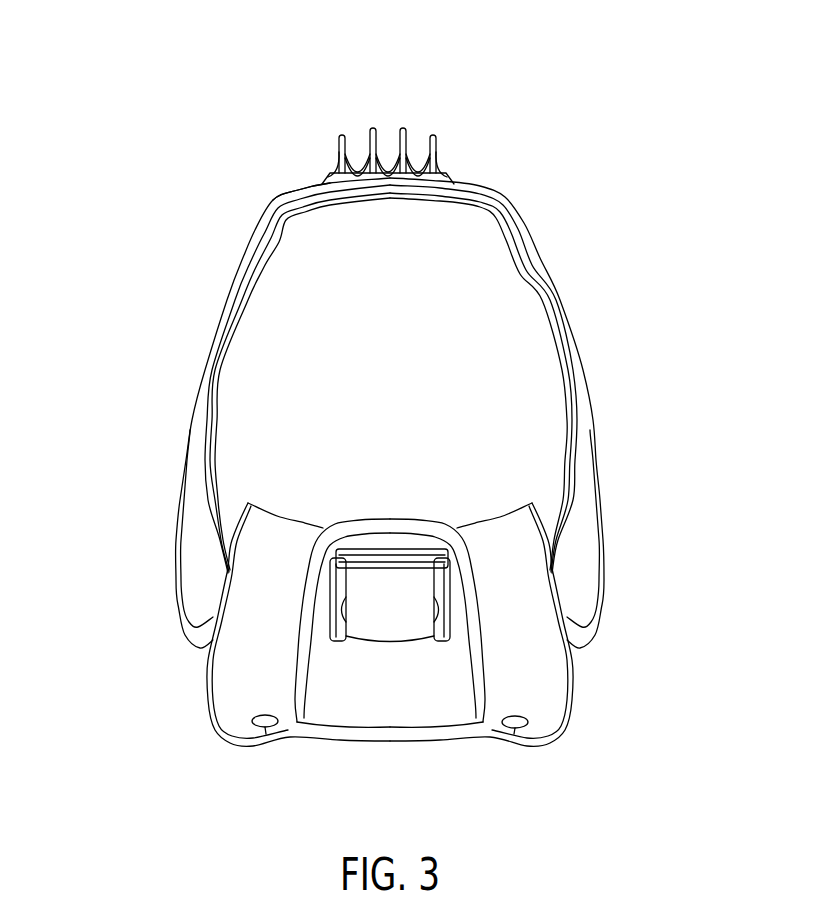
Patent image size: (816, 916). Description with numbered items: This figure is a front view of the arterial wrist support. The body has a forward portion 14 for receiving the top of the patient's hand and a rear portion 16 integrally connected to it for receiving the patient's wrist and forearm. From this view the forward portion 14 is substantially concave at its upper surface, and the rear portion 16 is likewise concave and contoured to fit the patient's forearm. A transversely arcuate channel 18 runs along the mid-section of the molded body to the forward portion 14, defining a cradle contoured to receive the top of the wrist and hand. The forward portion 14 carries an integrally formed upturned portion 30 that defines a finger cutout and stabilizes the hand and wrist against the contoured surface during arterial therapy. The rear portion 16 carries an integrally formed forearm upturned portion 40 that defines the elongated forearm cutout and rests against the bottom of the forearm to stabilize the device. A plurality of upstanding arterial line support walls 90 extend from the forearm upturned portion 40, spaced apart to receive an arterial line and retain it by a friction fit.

The forward portion 14 is at (503, 510).
The rear portion 16 is at (477, 183).
The transversely arcuate channel 18 is at (283, 513).
The upturned portion 30 is at (413, 528).
The forearm upturned portion 40 is at (299, 190).
The arterial line support walls 90 is at (353, 137).